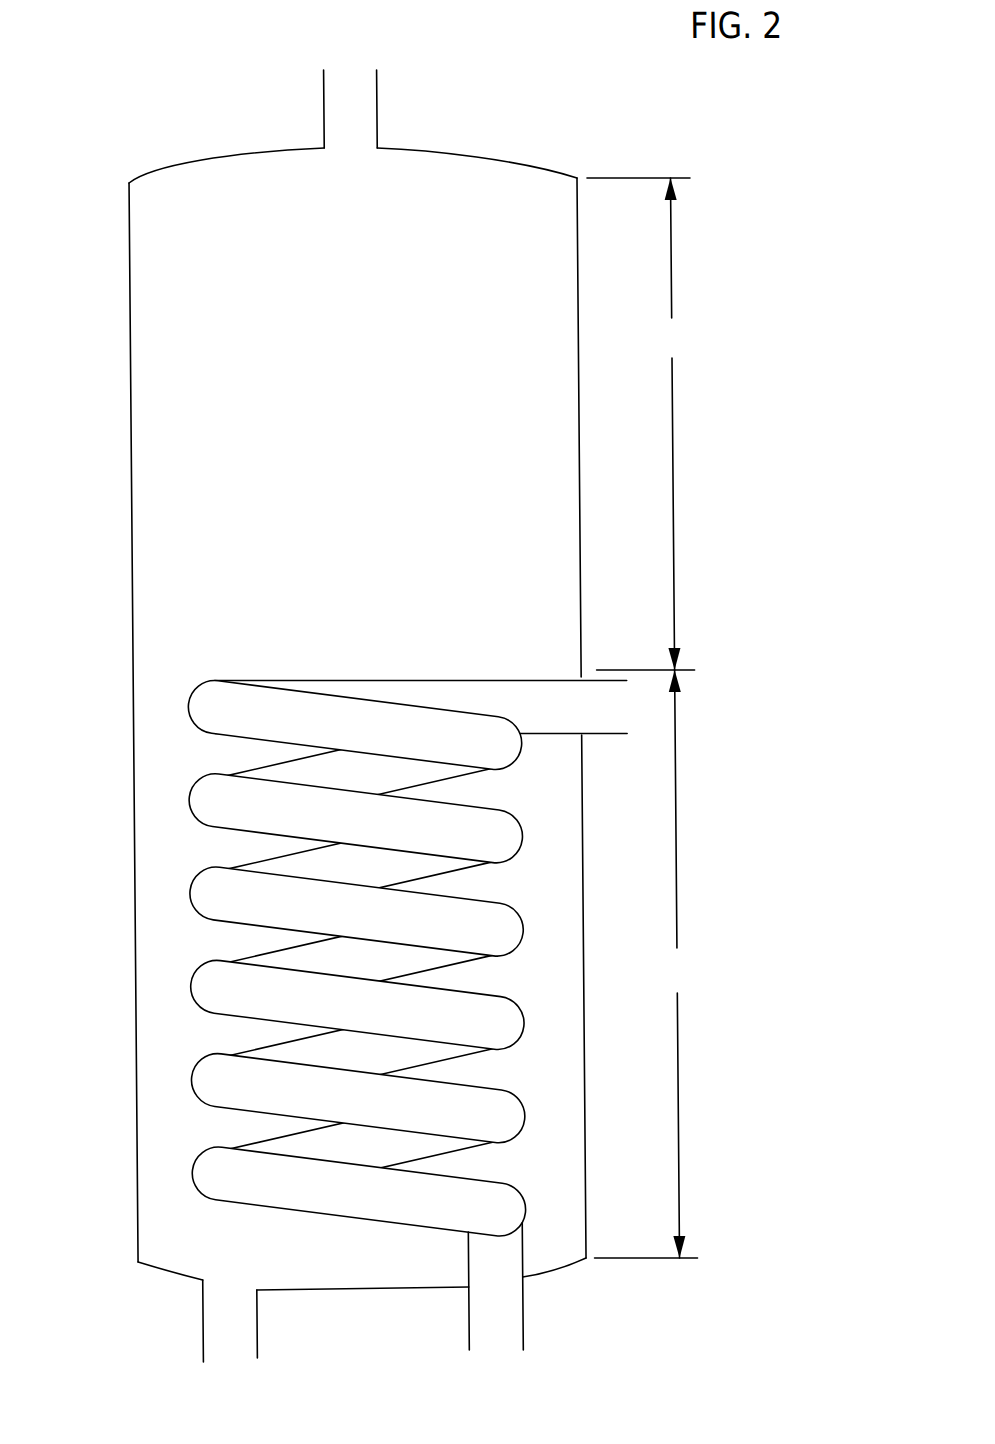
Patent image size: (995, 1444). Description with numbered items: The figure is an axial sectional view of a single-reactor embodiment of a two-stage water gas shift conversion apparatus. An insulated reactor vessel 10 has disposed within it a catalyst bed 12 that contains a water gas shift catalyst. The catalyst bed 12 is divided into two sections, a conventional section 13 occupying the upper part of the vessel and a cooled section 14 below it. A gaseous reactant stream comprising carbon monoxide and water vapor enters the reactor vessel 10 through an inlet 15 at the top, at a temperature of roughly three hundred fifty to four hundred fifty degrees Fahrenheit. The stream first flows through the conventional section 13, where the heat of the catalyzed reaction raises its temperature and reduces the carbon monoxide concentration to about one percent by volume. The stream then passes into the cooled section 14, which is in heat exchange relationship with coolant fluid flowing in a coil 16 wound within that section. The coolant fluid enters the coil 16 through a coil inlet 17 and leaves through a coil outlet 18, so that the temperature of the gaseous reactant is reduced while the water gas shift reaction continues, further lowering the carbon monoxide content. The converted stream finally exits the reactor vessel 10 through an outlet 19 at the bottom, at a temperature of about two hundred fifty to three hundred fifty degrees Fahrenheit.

The insulated reactor vessel 10 is at (159, 110).
The catalyst bed 12 is at (133, 426).
The conventional section 13 is at (641, 424).
The cooled section 14 is at (644, 964).
The inlet 15 is at (353, 80).
The coil 16 is at (516, 1025).
The coil inlet 17 is at (494, 1340).
The coil outlet 18 is at (604, 710).
The outlet 19 is at (213, 1349).